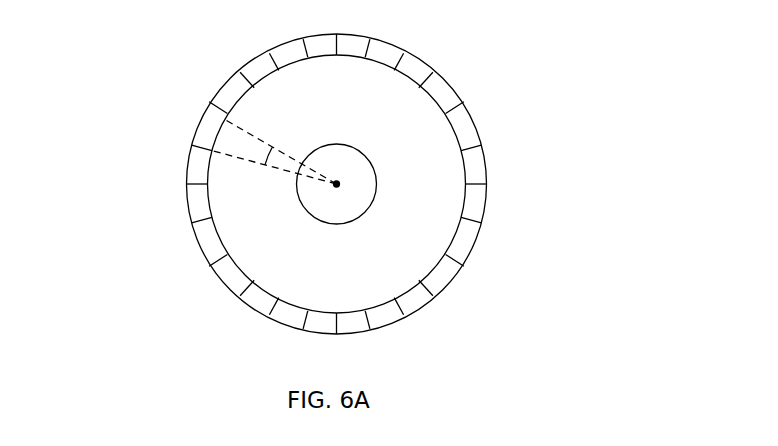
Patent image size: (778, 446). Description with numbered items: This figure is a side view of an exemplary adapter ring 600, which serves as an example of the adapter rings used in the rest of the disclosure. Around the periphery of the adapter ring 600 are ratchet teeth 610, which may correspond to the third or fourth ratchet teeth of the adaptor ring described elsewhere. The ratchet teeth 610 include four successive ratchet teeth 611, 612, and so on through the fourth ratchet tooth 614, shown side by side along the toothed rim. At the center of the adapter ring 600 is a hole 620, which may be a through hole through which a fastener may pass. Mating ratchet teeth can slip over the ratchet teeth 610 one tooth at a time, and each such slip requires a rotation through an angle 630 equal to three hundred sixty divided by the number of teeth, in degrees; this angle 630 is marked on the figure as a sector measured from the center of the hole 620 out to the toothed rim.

The adapter ring 600 is at (133, 75).
The ratchet teeth 610 is at (427, 73).
The ratchet tooth 611 is at (212, 183).
The ratchet tooth 612 is at (208, 150).
The ratchet tooth 614 is at (202, 219).
The hole 620 is at (362, 178).
The angle 630 is at (265, 163).